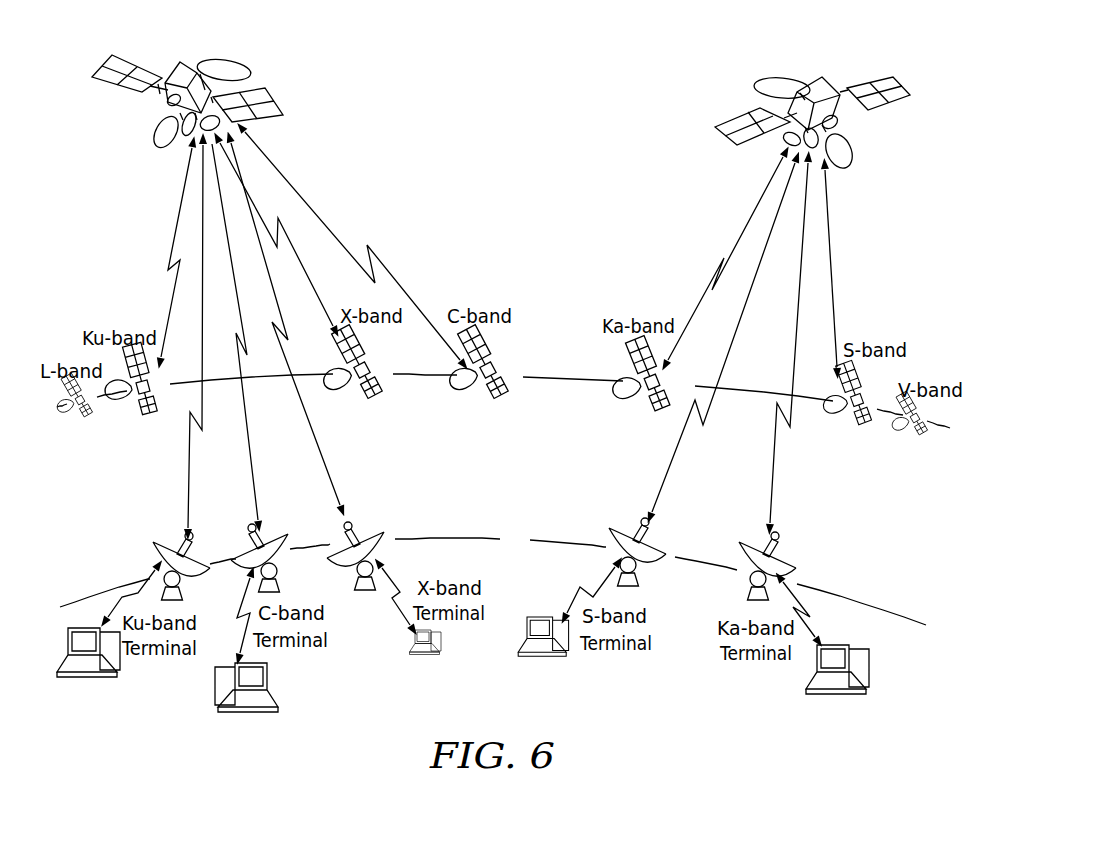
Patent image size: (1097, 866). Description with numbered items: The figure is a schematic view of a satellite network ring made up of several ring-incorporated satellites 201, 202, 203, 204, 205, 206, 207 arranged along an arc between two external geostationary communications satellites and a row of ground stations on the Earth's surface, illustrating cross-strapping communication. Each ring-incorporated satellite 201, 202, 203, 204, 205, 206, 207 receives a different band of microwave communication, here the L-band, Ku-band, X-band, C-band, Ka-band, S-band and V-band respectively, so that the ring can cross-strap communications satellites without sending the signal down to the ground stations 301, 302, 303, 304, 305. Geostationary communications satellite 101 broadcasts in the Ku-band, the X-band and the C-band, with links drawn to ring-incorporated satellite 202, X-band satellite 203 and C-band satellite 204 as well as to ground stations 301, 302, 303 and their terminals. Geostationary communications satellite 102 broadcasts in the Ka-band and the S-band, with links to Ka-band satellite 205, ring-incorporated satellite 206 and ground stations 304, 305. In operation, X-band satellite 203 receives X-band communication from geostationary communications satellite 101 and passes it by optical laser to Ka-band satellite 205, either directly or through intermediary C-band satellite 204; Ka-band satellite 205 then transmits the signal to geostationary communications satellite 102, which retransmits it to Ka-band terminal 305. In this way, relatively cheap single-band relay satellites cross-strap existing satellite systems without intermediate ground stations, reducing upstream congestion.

The geostationary communications satellite 101 is at (190, 62).
The geostationary communications satellite 102 is at (817, 85).
The ring-incorporated satellite 201 is at (83, 405).
The ring-incorporated satellite 202 is at (148, 395).
The X-band satellite 203 is at (365, 392).
The C-band satellite 204 is at (490, 390).
The Ka-band satellite 205 is at (653, 400).
The ring-incorporated satellite 206 is at (860, 412).
The ring-incorporated satellite 207 is at (915, 422).
The ground station 301 is at (163, 538).
The ground station 302 is at (242, 552).
The ground station 303 is at (338, 543).
The ground station 304 is at (622, 528).
The Ka-band terminal 305 is at (752, 542).